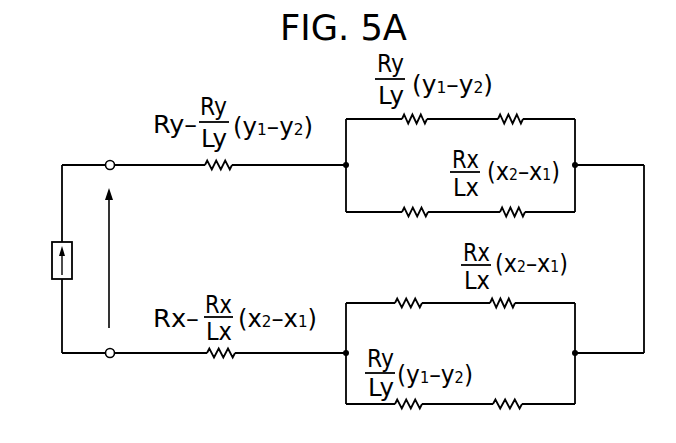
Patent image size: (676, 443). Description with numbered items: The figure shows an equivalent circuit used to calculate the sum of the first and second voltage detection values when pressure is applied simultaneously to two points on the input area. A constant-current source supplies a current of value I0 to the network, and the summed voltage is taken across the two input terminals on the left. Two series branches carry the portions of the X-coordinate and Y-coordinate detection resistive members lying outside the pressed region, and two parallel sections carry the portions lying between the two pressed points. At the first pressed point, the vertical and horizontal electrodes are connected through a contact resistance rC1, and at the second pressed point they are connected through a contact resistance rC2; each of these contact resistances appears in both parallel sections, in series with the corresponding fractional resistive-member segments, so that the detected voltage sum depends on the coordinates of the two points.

The current value of the constant-current source I0 is at (47, 261).
The contact resistance rC1 is at (461, 197).
The contact resistance rC2 is at (463, 293).